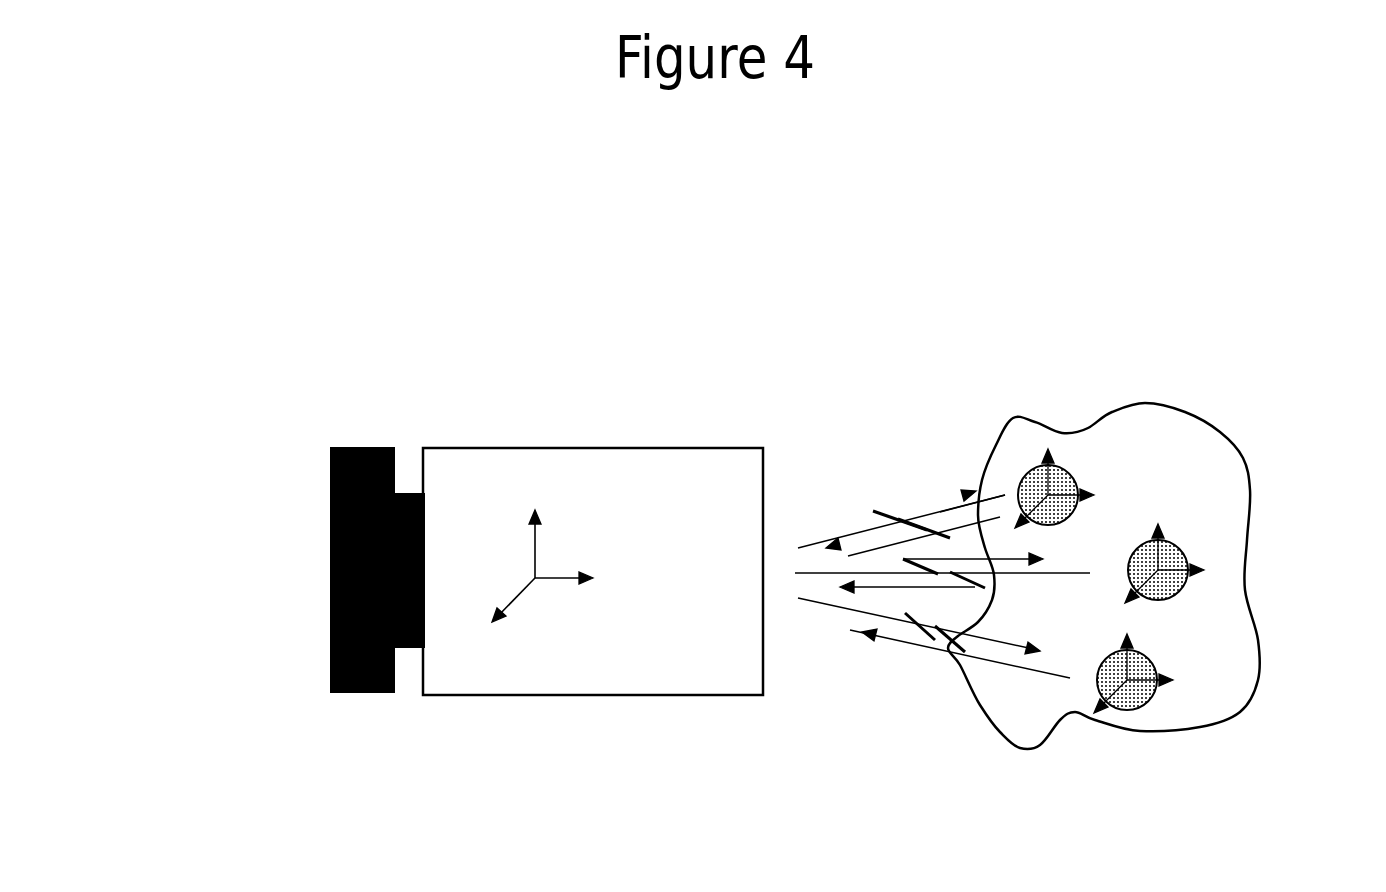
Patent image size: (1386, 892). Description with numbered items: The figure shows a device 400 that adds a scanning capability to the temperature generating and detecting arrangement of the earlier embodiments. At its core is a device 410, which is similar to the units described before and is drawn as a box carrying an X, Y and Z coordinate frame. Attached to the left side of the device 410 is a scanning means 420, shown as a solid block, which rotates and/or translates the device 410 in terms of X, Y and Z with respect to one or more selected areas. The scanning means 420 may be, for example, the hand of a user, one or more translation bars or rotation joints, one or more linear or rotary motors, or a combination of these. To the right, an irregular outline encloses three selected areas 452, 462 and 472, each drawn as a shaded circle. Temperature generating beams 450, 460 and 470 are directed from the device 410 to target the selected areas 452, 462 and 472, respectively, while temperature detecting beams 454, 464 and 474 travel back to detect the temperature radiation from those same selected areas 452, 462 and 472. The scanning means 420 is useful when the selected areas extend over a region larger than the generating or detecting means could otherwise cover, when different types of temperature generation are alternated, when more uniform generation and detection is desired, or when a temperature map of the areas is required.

The device 400 is at (488, 651).
The device 410 is at (572, 695).
The scanning means 420 is at (330, 486).
The temperature generating beam 450 is at (827, 541).
The selected area 452 is at (1085, 492).
The temperature detecting beam 454 is at (935, 513).
The temperature generating beam 460 is at (842, 574).
The selected area 462 is at (1195, 575).
The temperature detecting beam 464 is at (885, 589).
The temperature generating beam 470 is at (800, 608).
The selected area 472 is at (1160, 692).
The temperature detecting beam 474 is at (905, 647).